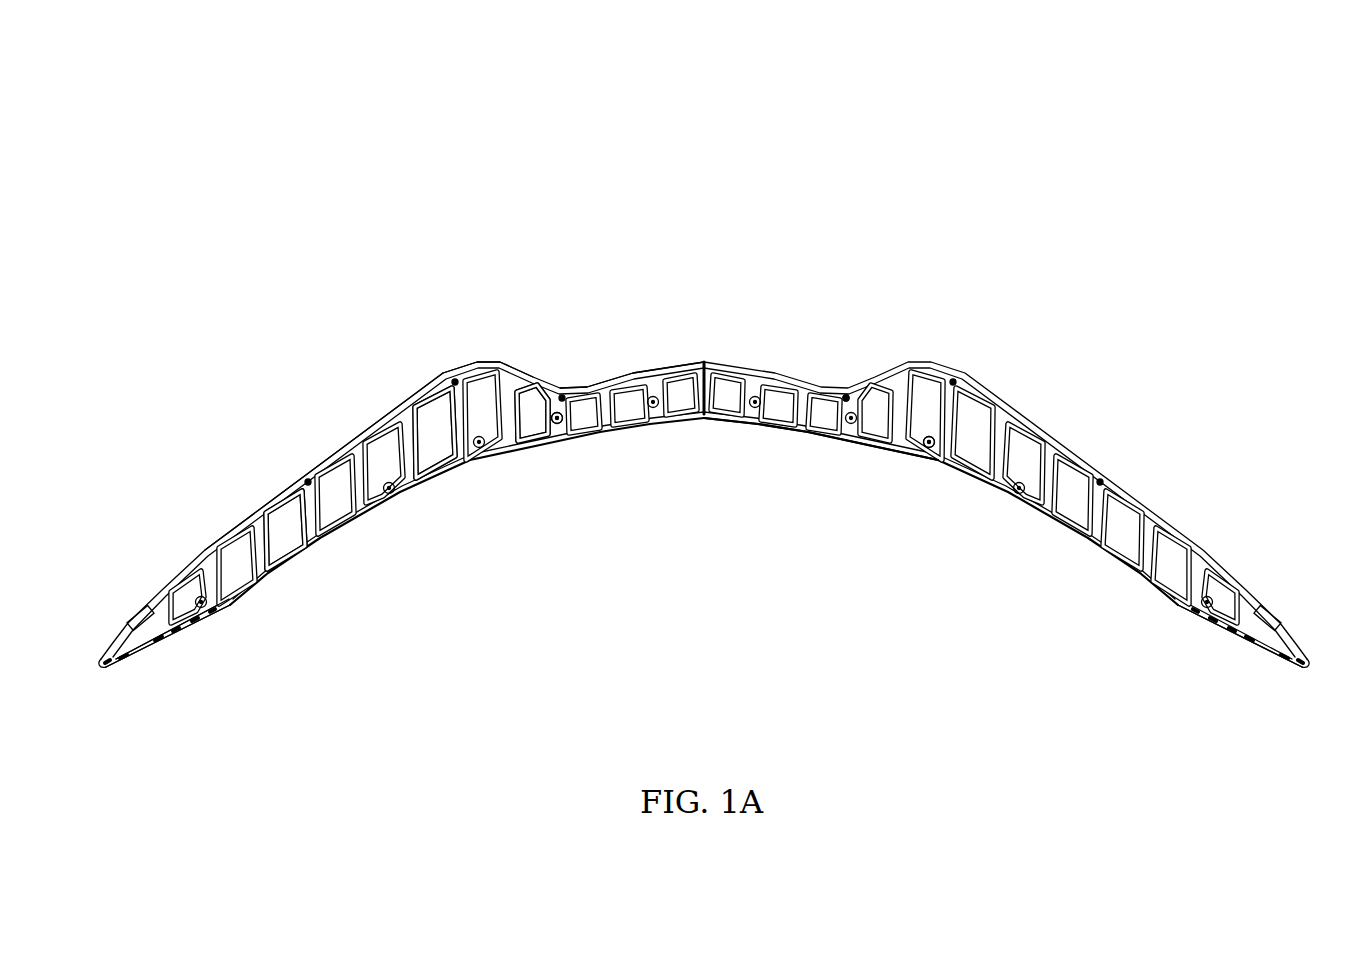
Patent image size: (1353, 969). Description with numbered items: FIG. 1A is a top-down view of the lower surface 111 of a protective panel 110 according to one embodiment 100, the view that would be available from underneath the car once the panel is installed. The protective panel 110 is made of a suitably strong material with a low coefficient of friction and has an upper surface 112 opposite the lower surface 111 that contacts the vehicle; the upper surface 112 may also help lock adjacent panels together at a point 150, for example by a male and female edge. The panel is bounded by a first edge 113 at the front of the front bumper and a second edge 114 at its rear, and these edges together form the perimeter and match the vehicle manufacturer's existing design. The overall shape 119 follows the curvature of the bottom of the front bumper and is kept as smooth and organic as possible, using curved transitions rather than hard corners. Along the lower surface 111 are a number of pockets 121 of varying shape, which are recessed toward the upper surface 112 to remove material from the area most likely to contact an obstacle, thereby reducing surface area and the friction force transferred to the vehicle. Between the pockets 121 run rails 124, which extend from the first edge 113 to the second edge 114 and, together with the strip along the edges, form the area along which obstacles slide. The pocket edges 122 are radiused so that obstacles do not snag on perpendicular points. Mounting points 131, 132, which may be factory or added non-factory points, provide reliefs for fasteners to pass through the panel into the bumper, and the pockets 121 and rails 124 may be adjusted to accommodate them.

The embodiment 100 is at (290, 215).
The protective panel 110 is at (876, 341).
The lower surface 111 is at (354, 452).
The upper surface 112 is at (238, 605).
The first edge 113 is at (628, 374).
The second edge 114 is at (800, 432).
The shape 119 is at (497, 361).
The pocket 121 is at (286, 547).
The pocket edge 122 is at (547, 402).
The rail 124 is at (408, 472).
The mounting point 131 is at (843, 396).
The mounting point 132 is at (928, 446).
The point 150 is at (704, 416).